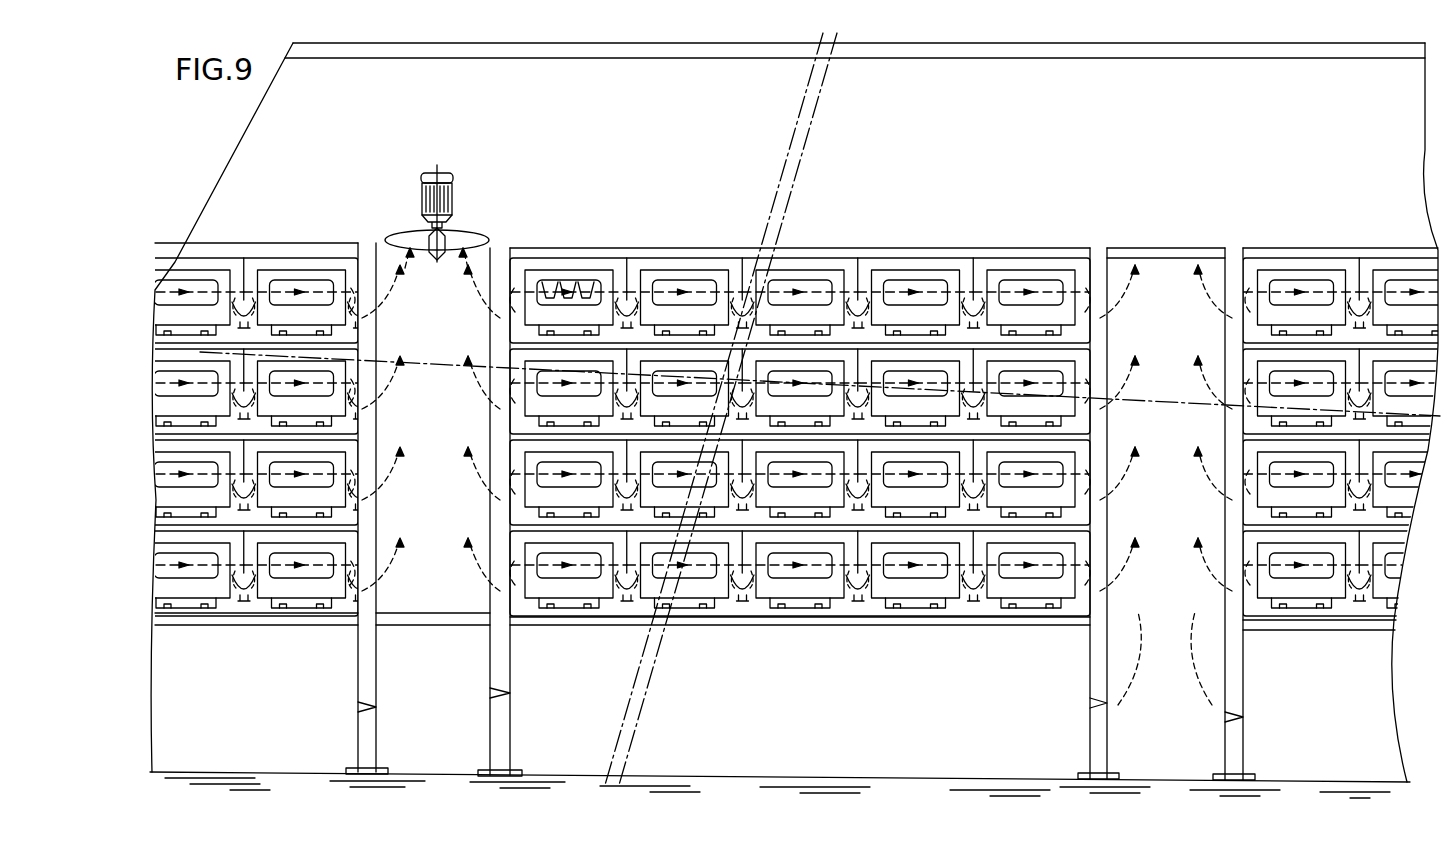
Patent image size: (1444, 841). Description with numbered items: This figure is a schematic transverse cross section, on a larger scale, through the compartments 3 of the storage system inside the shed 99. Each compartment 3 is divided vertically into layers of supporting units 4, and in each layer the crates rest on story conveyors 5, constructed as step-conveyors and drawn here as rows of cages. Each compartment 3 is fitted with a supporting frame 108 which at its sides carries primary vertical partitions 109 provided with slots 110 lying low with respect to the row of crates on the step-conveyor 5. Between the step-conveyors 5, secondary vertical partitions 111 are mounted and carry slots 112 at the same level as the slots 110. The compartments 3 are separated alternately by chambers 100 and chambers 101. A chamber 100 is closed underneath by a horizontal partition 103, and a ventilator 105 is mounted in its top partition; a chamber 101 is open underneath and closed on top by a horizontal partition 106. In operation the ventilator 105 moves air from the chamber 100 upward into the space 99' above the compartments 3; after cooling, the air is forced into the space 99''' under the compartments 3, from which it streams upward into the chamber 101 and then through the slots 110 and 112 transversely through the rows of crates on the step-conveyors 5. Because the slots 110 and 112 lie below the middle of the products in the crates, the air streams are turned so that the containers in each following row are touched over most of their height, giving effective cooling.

The compartment 3 is at (828, 247).
The supporting unit 4 is at (505, 471).
The story conveyor 5 is at (300, 593).
The shed 99 is at (855, 66).
The space above the compartments 99' is at (842, 131).
The space under the compartments 99''' is at (787, 713).
The chamber 100 is at (447, 524).
The chamber 101 is at (1182, 590).
The horizontal partition 103 is at (437, 626).
The ventilator 105 is at (459, 221).
The horizontal partition 106 is at (1163, 246).
The supporting frame 108 is at (628, 247).
The primary vertical partition 109 is at (362, 290).
The slot 110 is at (362, 578).
The secondary vertical partition 111 is at (240, 540).
The slot 112 is at (630, 590).